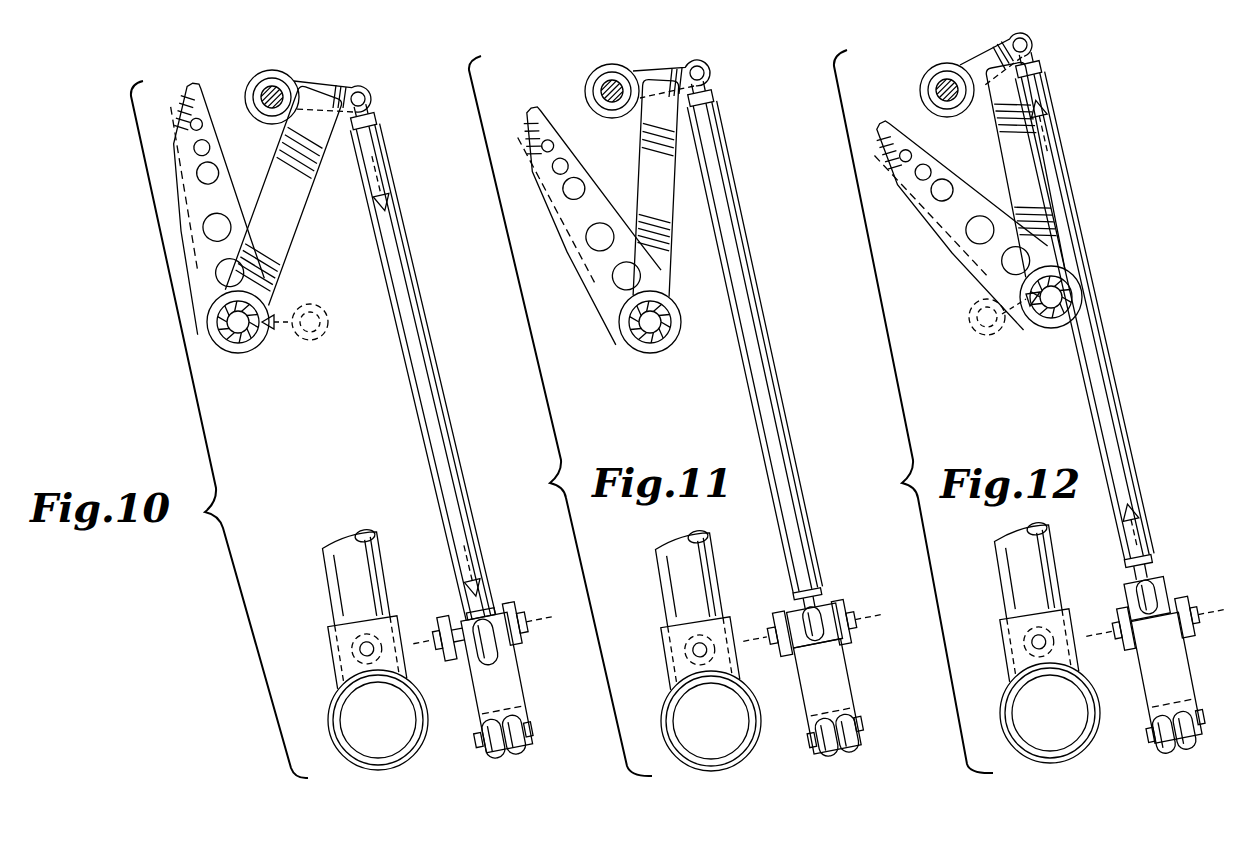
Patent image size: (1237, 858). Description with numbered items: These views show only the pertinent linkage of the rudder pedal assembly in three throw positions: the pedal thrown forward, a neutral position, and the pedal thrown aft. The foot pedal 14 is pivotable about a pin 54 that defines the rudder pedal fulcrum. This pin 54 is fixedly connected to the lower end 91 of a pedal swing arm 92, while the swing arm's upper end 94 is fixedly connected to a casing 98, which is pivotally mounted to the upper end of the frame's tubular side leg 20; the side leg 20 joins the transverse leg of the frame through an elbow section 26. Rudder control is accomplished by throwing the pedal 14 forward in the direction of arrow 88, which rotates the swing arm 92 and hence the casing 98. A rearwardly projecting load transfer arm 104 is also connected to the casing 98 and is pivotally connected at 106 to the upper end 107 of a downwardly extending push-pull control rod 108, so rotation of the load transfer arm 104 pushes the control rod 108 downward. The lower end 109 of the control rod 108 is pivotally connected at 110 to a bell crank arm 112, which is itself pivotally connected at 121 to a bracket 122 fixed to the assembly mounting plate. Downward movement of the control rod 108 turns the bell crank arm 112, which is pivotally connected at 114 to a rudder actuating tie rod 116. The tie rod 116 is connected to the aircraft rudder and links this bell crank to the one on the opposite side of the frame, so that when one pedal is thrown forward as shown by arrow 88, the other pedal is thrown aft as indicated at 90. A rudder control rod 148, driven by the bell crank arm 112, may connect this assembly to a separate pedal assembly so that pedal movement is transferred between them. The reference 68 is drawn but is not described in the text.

In FIG. 10, the foot pedal 14 is at (180, 231).
In FIG. 11, the foot pedal 14 is at (590, 270).
In FIG. 12, the foot pedal 14 is at (960, 260).
In FIG. 10, the tubular side leg 20 is at (329, 588).
In FIG. 11, the tubular side leg 20 is at (664, 586).
In FIG. 12, the tubular side leg 20 is at (1003, 584).
In FIG. 10, the elbow section 26 is at (395, 760).
In FIG. 11, the elbow section 26 is at (722, 758).
In FIG. 12, the elbow section 26 is at (1043, 757).
In FIG. 10, the pin 54 is at (236, 330).
In FIG. 11, the pin 54 is at (658, 326).
In FIG. 12, the pin 54 is at (1072, 298).
In FIG. 10, the shaft 68 is at (246, 84).
In FIG. 11, the shaft 68 is at (604, 68).
In FIG. 12, the shaft 68 is at (923, 68).
In FIG. 10, the arrow 88 is at (305, 342).
In FIG. 12, the aft-thrown pedal position 90 is at (1013, 345).
In FIG. 10, the lower end of pedal swing arm 91 is at (244, 356).
In FIG. 11, the lower end of pedal swing arm 91 is at (648, 355).
In FIG. 12, the lower end of pedal swing arm 91 is at (1056, 329).
In FIG. 10, the pedal swing arm 92 is at (296, 210).
In FIG. 11, the pedal swing arm 92 is at (670, 187).
In FIG. 12, the pedal swing arm 92 is at (1027, 190).
In FIG. 10, the upper end of swing arm 94 is at (313, 98).
In FIG. 11, the upper end of swing arm 94 is at (647, 83).
In FIG. 12, the upper end of swing arm 94 is at (987, 103).
In FIG. 10, the casing 98 is at (266, 80).
In FIG. 11, the casing 98 is at (617, 112).
In FIG. 12, the casing 98 is at (928, 88).
In FIG. 10, the load transfer arm 104 is at (338, 82).
In FIG. 11, the load transfer arm 104 is at (660, 68).
In FIG. 12, the load transfer arm 104 is at (993, 52).
In FIG. 10, the pivotal connection 106 is at (367, 97).
In FIG. 11, the pivotal connection 106 is at (705, 70).
In FIG. 12, the pivotal connection 106 is at (1032, 45).
In FIG. 10, the upper end of control rod 107 is at (377, 121).
In FIG. 11, the upper end of control rod 107 is at (712, 97).
In FIG. 12, the upper end of control rod 107 is at (1042, 66).
In FIG. 10, the push-pull control rod 108 is at (414, 268).
In FIG. 11, the push-pull control rod 108 is at (751, 259).
In FIG. 12, the push-pull control rod 108 is at (1111, 371).
In FIG. 10, the lower end of control rod 109 is at (481, 608).
In FIG. 11, the lower end of control rod 109 is at (822, 591).
In FIG. 12, the lower end of control rod 109 is at (1150, 562).
In FIG. 10, the pivotal connection 110 is at (496, 640).
In FIG. 11, the pivotal connection 110 is at (845, 628).
In FIG. 12, the pivotal connection 110 is at (1167, 590).
In FIG. 10, the bell crank arm 112 is at (521, 684).
In FIG. 11, the bell crank arm 112 is at (851, 690).
In FIG. 12, the bell crank arm 112 is at (1172, 679).
In FIG. 10, the pivotal connection 114 is at (533, 730).
In FIG. 11, the pivotal connection 114 is at (865, 724).
In FIG. 12, the pivotal connection 114 is at (1204, 718).
In FIG. 10, the rudder actuating tie rod 116 is at (498, 759).
In FIG. 11, the rudder actuating tie rod 116 is at (830, 757).
In FIG. 12, the rudder actuating tie rod 116 is at (1167, 754).
In FIG. 10, the pivotal connection 121 is at (527, 620).
In FIG. 11, the pivotal connection 121 is at (856, 618).
In FIG. 12, the pivotal connection 121 is at (1197, 616).
In FIG. 10, the bracket 122 is at (508, 603).
In FIG. 11, the bracket 122 is at (838, 601).
In FIG. 12, the bracket 122 is at (1182, 600).
In FIG. 10, the rudder control rod 148 is at (519, 755).
In FIG. 11, the rudder control rod 148 is at (850, 753).
In FIG. 12, the rudder control rod 148 is at (1188, 750).